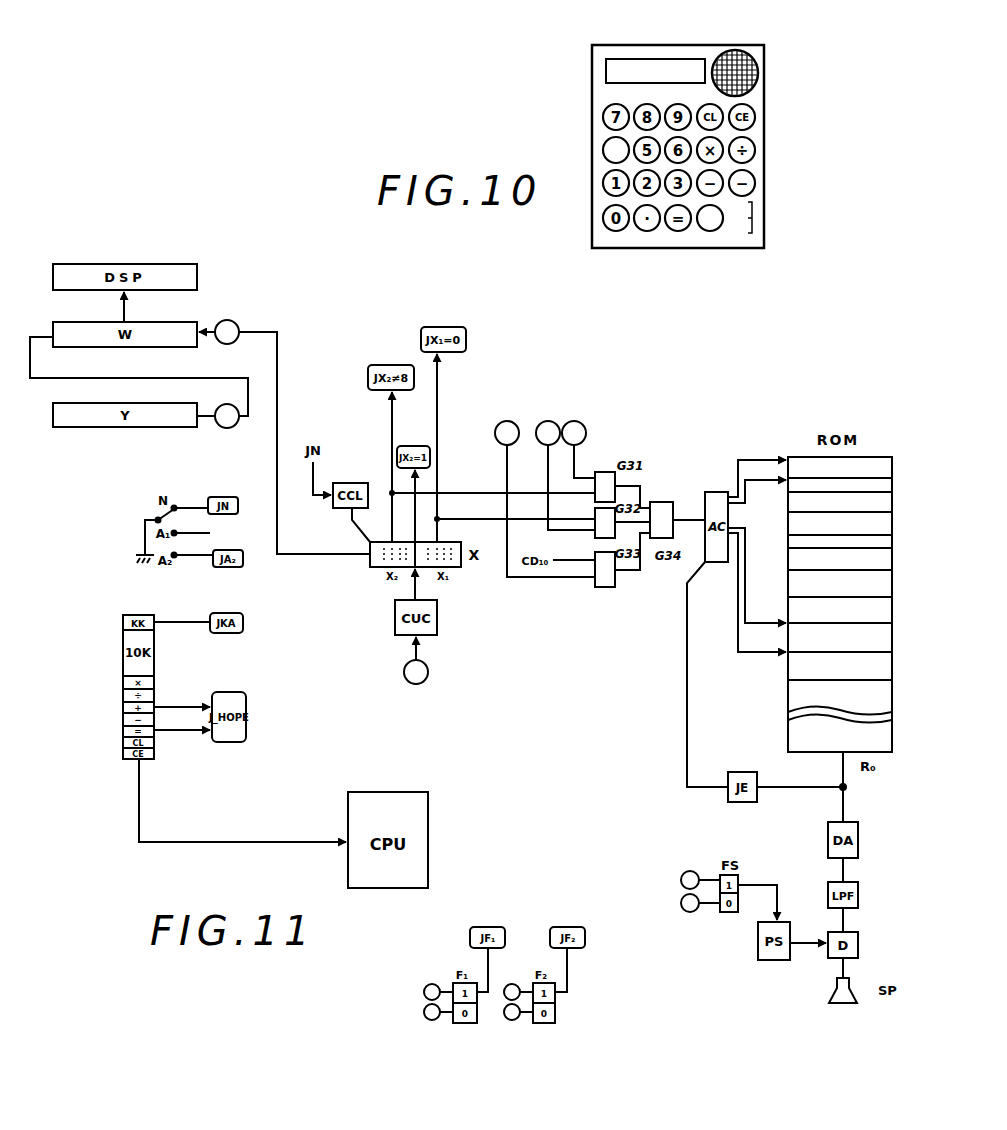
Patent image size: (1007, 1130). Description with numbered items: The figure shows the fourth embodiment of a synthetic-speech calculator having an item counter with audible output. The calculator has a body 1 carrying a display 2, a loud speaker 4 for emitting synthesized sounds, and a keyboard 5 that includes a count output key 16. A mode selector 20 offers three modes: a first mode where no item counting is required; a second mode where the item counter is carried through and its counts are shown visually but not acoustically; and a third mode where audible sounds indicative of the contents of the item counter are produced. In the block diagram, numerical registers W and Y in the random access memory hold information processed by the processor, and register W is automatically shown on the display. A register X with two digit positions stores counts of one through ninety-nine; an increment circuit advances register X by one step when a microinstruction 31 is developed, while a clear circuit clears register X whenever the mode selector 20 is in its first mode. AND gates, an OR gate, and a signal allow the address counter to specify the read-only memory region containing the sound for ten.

In FIG. 10, the body 1 is at (650, 45).
In FIG. 10, the display 2 is at (606, 73).
In FIG. 10, the loud speaker 4 is at (757, 82).
In FIG. 10, the keyboard 5 is at (603, 152).
In FIG. 10, the count output key 16 is at (709, 231).
In FIG. 10, the mode selector 20 is at (752, 218).
In FIG. 11, the microinstruction 31 is at (435, 661).